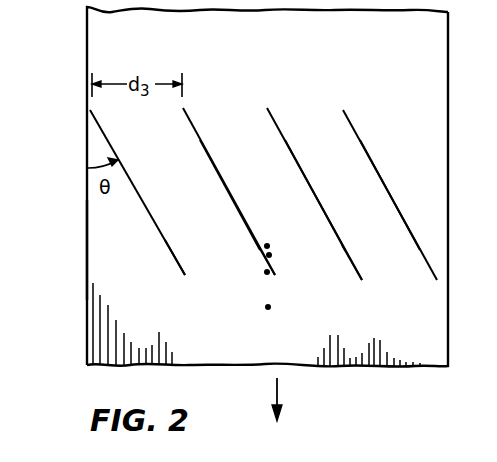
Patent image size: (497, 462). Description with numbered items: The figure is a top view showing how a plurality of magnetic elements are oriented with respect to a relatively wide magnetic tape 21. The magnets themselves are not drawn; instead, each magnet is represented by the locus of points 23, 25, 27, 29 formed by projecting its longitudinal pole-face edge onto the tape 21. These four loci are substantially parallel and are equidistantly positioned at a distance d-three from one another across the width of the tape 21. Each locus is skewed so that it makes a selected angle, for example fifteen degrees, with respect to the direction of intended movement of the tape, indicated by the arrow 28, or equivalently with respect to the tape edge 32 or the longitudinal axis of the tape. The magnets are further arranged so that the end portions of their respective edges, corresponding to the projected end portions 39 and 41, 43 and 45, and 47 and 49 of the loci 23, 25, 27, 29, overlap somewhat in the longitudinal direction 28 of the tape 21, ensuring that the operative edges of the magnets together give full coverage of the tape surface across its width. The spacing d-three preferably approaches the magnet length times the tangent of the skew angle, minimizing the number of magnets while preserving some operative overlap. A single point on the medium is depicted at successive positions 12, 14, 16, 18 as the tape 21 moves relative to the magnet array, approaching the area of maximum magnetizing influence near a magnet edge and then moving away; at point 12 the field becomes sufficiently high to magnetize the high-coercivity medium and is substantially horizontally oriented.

The magnetic tape 21 is at (98, 52).
The tape edge 32 is at (88, 243).
The first locus of points 23 is at (148, 210).
The second locus of points 25 is at (238, 207).
The third locus of points 27 is at (320, 207).
The fourth locus of points 29 is at (395, 207).
The projected end portion 39 is at (185, 275).
The projected end portion 41 is at (183, 108).
The projected end portion 43 is at (275, 275).
The projected end portion 45 is at (267, 108).
The projected end portion 47 is at (362, 280).
The projected end portion 49 is at (343, 110).
The point on the medium 12 is at (267, 246).
The point on the medium 14 is at (269, 255).
The point on the medium 16 is at (267, 272).
The point on the medium 18 is at (268, 307).
The arrow 28 is at (279, 399).